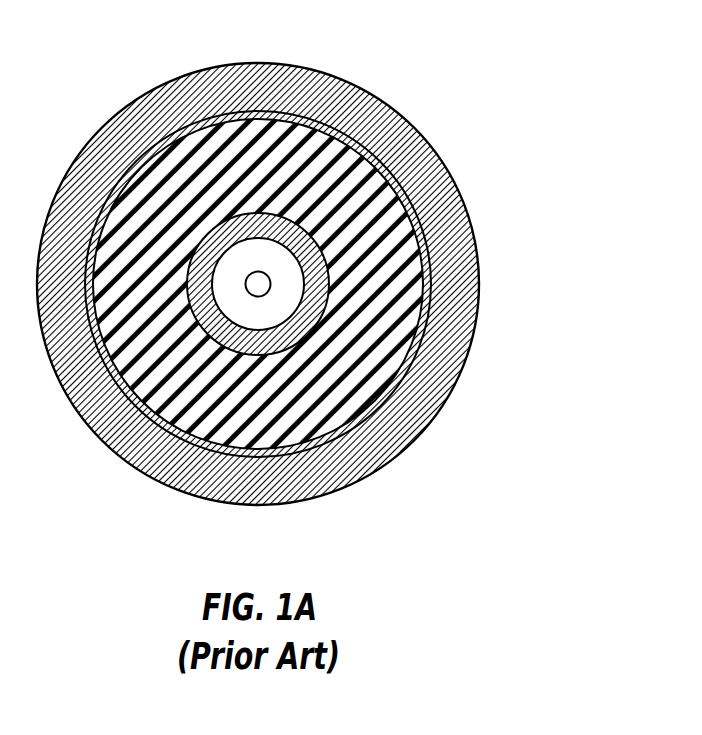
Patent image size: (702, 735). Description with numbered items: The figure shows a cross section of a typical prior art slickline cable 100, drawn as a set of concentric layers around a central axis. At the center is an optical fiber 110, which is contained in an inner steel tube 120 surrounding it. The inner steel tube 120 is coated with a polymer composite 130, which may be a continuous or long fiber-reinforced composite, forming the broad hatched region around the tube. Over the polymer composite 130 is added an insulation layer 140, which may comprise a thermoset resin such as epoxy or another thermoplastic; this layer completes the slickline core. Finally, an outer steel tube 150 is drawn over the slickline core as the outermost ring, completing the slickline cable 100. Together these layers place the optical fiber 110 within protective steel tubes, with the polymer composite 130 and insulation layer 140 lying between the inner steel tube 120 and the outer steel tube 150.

The slickline cable 100 is at (464, 64).
The optical fiber 110 is at (270, 284).
The inner steel tube 120 is at (318, 287).
The polymer composite 130 is at (398, 284).
The insulation layer 140 is at (423, 337).
The outer steel tube 150 is at (402, 422).